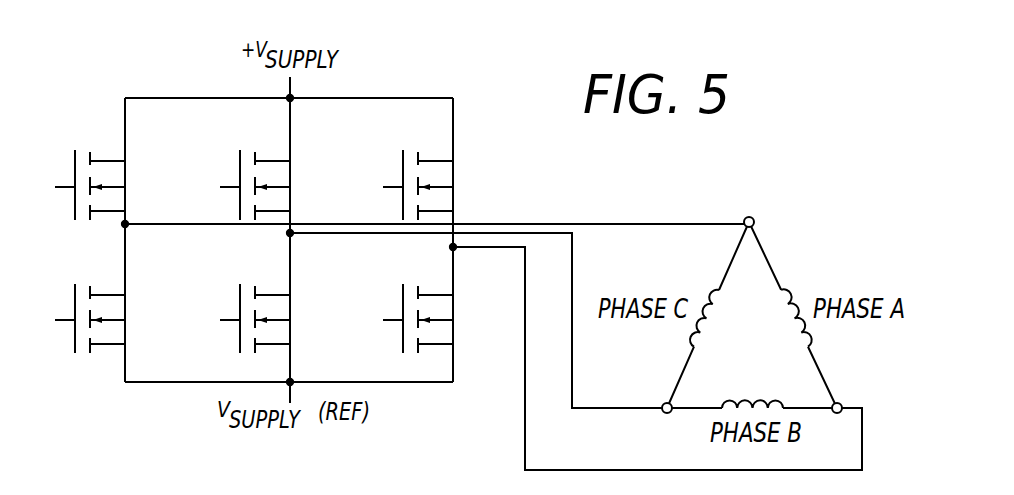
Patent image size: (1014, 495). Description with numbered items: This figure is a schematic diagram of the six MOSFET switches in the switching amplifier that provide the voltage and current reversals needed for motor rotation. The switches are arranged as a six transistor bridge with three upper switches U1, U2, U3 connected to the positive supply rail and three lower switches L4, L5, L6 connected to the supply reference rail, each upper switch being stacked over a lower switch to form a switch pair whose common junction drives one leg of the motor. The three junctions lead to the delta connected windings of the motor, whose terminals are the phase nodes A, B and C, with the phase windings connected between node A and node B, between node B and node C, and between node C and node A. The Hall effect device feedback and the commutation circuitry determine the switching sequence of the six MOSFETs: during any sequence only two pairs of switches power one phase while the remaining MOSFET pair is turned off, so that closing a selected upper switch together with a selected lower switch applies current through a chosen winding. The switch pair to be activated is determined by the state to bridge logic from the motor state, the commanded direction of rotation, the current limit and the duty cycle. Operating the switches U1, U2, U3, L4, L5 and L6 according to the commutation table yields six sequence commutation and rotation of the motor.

The upper MOSFET switch U1 is at (75, 173).
The upper MOSFET switch U2 is at (240, 173).
The upper MOSFET switch U3 is at (403, 173).
The lower MOSFET switch L4 is at (75, 307).
The lower MOSFET switch L5 is at (240, 307).
The lower MOSFET switch L6 is at (403, 307).
The phase A is at (747, 208).
The phase B is at (841, 421).
The phase C is at (660, 422).